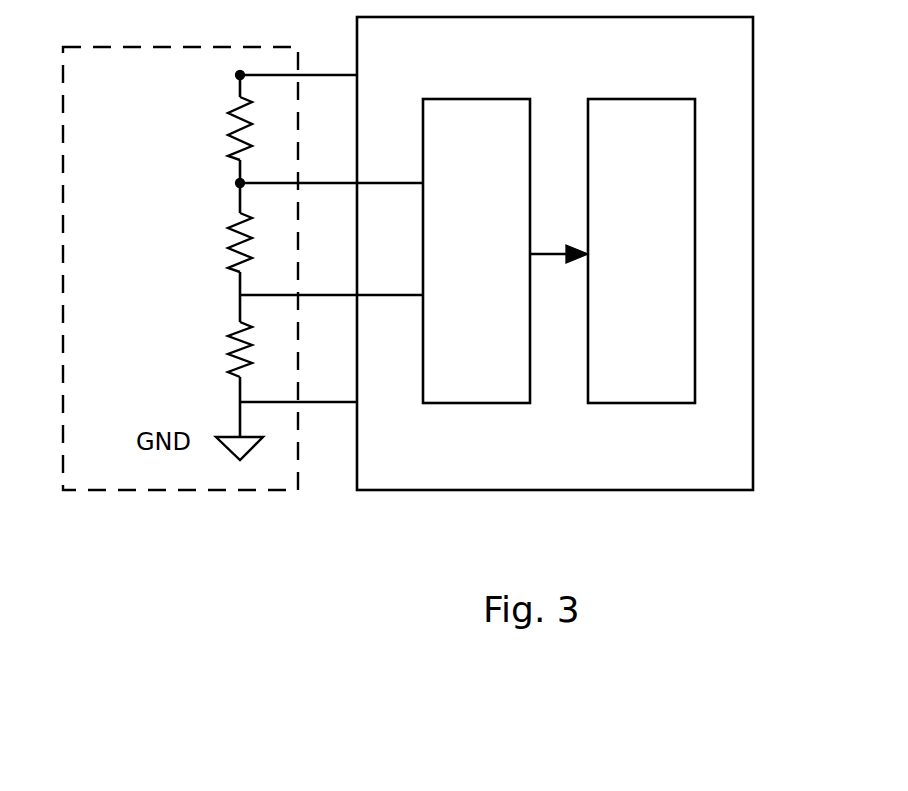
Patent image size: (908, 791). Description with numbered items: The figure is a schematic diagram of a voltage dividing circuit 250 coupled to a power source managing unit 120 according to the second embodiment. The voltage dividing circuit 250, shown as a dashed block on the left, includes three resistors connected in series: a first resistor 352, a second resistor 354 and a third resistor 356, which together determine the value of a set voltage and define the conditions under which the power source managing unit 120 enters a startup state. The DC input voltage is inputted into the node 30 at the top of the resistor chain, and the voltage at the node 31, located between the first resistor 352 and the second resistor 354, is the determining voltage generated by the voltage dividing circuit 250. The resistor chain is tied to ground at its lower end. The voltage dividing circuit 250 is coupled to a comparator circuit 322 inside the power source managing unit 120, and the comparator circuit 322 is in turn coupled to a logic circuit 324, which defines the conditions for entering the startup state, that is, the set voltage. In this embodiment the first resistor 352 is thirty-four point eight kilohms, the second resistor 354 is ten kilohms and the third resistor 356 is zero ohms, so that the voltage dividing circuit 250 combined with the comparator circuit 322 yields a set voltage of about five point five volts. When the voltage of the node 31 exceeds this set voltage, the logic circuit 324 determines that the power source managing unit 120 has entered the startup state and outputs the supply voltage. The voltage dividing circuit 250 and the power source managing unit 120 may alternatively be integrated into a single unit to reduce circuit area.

The power source managing unit 120 is at (753, 62).
The voltage dividing circuit 250 is at (176, 47).
The node 30 is at (240, 75).
The node 31 is at (240, 183).
The first resistor 352 is at (233, 128).
The second resistor 354 is at (233, 240).
The third resistor 356 is at (233, 350).
The comparator circuit 322 is at (458, 99).
The logic circuit 324 is at (613, 99).